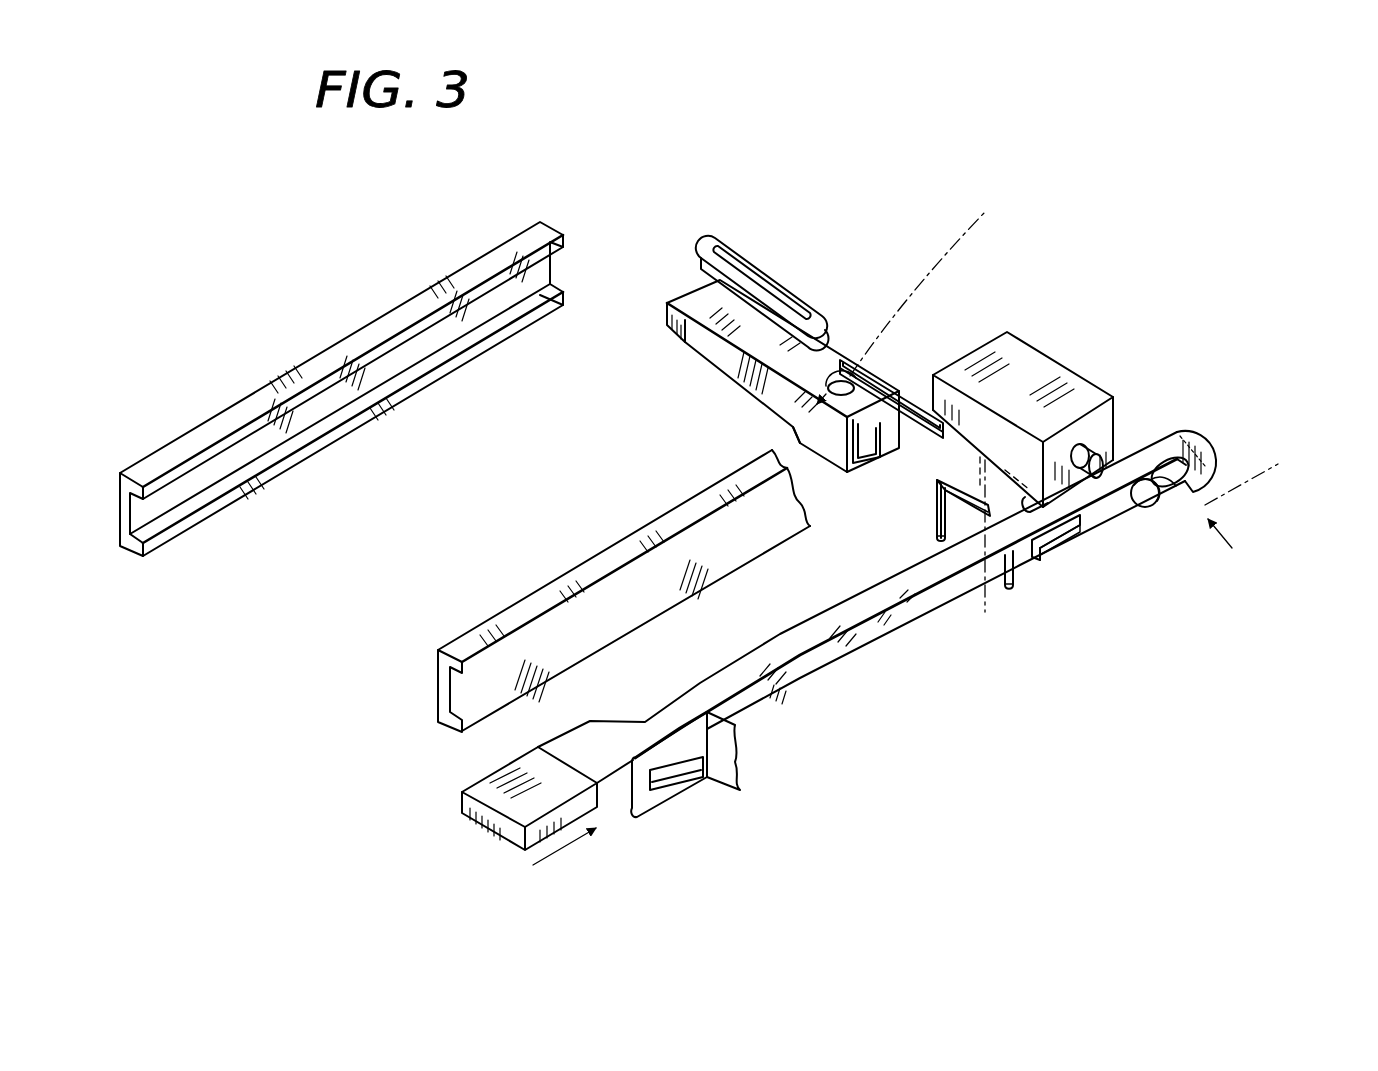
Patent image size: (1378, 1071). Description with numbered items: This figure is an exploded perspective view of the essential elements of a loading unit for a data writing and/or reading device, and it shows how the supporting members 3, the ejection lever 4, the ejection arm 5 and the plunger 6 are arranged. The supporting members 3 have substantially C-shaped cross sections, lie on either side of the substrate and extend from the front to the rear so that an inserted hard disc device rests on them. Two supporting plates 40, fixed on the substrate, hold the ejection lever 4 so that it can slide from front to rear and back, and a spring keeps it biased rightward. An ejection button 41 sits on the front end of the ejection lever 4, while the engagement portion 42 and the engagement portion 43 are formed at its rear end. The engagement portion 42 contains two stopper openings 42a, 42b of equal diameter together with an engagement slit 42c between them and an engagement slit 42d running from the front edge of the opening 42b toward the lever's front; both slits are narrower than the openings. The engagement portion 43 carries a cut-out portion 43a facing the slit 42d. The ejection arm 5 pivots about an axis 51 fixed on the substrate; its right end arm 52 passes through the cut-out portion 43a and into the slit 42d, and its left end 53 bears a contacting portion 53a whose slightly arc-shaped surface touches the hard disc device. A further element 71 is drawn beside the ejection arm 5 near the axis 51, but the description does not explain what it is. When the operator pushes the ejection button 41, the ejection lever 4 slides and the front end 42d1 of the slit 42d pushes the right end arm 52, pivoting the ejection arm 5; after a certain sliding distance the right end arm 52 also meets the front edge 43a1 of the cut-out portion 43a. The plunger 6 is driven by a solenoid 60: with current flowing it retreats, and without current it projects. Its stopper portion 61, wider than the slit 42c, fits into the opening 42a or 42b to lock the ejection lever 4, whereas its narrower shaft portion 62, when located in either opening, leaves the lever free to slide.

The supporting member 3 is at (455, 638).
The ejection lever 4 is at (800, 676).
The ejection arm 5 is at (737, 340).
The plunger 6 is at (1102, 448).
The supporting plate 40 is at (727, 787).
The ejection button 41 is at (500, 794).
The engagement portion 42 is at (1113, 588).
The stopper opening 42a is at (1190, 463).
The stopper opening 42b is at (1196, 436).
The engagement slit 42c is at (1170, 493).
The engagement slit 42d is at (1010, 590).
The front end of the slit 42d1 is at (1018, 598).
The engagement portion 43 is at (937, 512).
The cut-out portion 43a is at (975, 522).
The front edge of the cut-out portion 43a1 is at (912, 605).
The axis 51 is at (843, 382).
The right end arm 52 is at (971, 558).
The left end 53 is at (722, 402).
The contacting portion 53a is at (770, 270).
The solenoid 60 is at (1060, 376).
The stopper portion 61 is at (1153, 508).
The shaft portion 62 is at (1056, 541).
The guide rail 71 is at (892, 400).